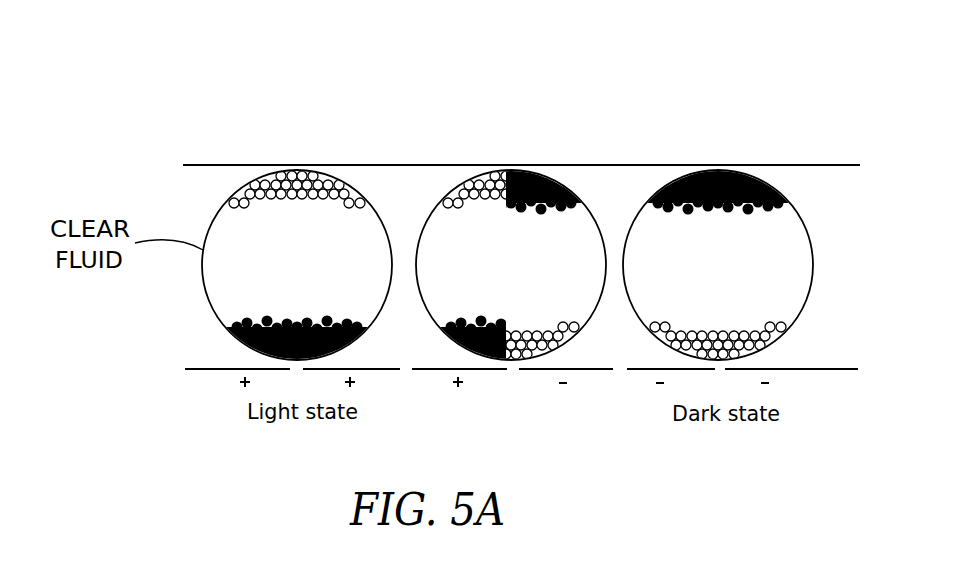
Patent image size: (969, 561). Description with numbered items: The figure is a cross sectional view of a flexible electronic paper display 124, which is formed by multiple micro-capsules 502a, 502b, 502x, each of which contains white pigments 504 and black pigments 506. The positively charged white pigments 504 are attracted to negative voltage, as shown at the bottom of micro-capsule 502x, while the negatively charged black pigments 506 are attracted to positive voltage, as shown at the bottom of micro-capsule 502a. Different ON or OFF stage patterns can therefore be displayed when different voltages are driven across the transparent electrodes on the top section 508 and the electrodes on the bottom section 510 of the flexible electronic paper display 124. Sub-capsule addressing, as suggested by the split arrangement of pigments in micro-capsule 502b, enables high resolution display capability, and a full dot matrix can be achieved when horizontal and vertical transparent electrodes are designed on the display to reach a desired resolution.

The flexible electronic paper display 124 is at (104, 57).
The micro-capsule 502a is at (325, 277).
The micro-capsule 502b is at (538, 277).
The micro-capsule 502x is at (745, 277).
The white pigments 504 is at (317, 172).
The black pigments 506 is at (535, 172).
The top section 508 is at (211, 164).
The bottom section 510 is at (842, 367).